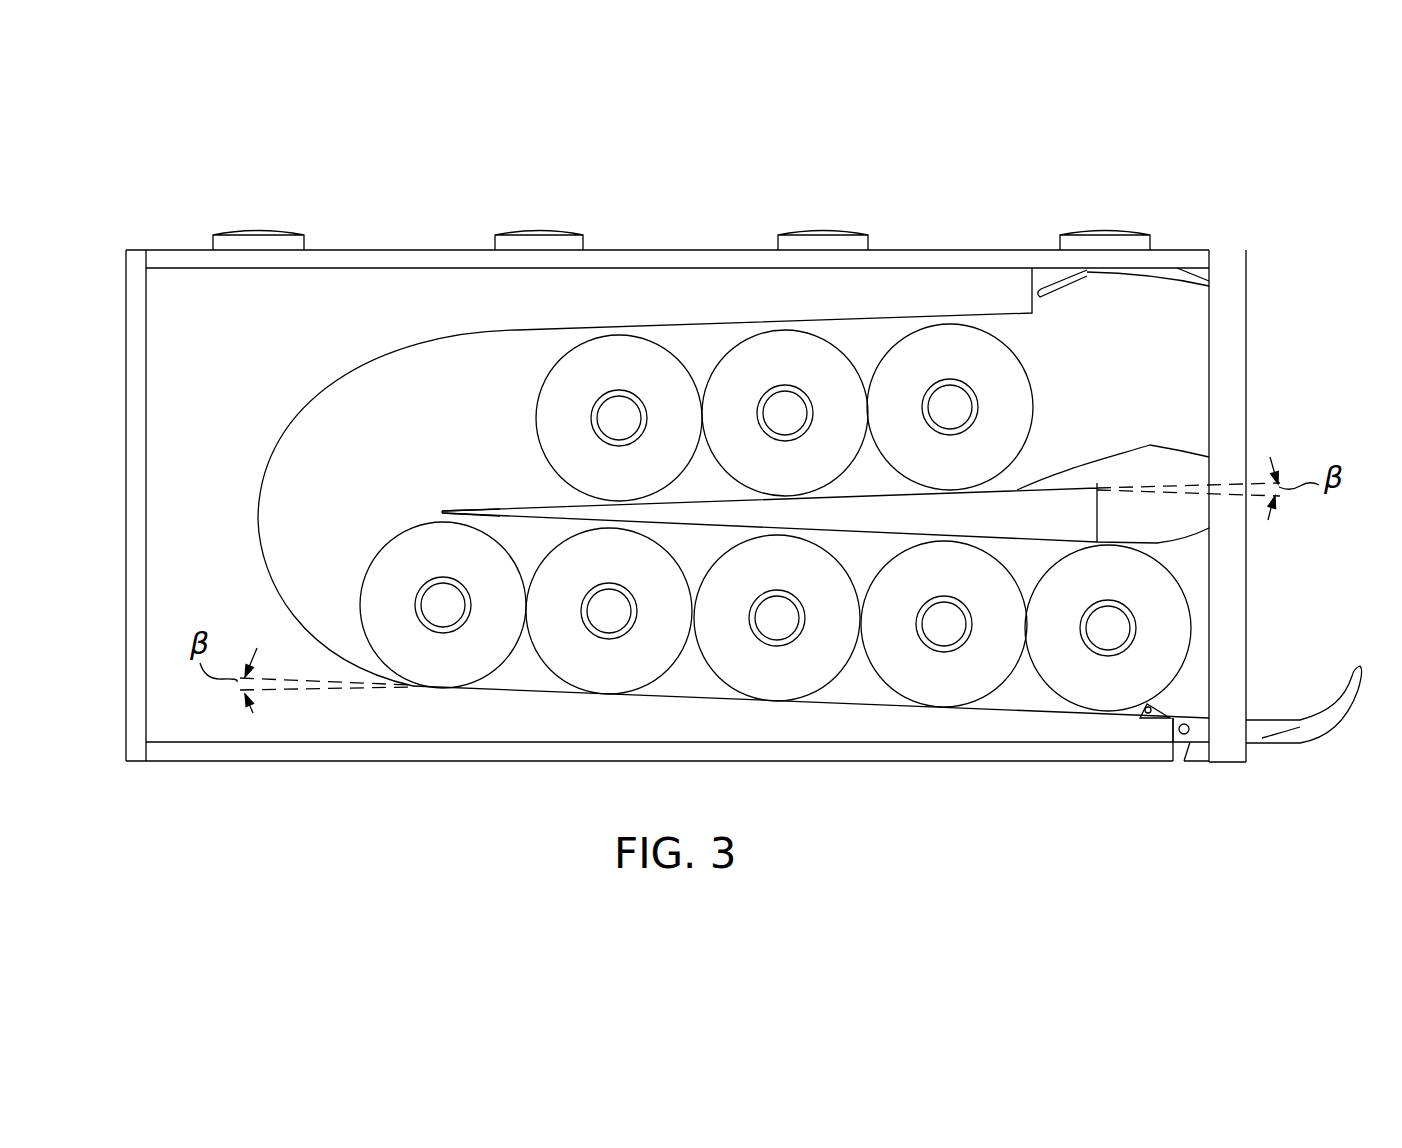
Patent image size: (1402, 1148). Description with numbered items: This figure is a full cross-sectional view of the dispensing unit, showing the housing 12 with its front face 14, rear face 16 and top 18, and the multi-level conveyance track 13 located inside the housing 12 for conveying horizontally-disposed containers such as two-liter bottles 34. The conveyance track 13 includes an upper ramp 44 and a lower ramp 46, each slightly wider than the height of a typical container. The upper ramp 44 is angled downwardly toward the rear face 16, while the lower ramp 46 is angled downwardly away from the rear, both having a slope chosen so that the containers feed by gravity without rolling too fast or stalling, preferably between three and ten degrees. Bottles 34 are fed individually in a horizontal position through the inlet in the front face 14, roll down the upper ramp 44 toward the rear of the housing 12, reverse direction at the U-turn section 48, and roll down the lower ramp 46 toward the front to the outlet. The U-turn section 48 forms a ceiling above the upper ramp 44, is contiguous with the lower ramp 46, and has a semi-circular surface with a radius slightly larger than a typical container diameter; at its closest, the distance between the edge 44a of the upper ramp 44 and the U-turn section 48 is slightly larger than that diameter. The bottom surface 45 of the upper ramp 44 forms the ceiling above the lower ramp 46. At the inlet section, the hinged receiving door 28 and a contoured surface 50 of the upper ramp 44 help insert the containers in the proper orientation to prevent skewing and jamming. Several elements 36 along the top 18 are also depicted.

The housing 12 is at (234, 343).
The conveyance track 13 is at (340, 526).
The front face 14 is at (1243, 448).
The rear face 16 is at (126, 442).
The top 18 is at (657, 250).
The receiving door 28 is at (1125, 272).
The bottles 34 is at (910, 702).
The bumpers 36 is at (828, 229).
The upper ramp 44 is at (1020, 489).
The edge of top ramp 44a is at (442, 511).
The bottom surface of upper ramp 45 is at (1032, 540).
The lower ramp 46 is at (517, 692).
The U-turn section 48 is at (268, 470).
The contoured surface 50 is at (1176, 436).